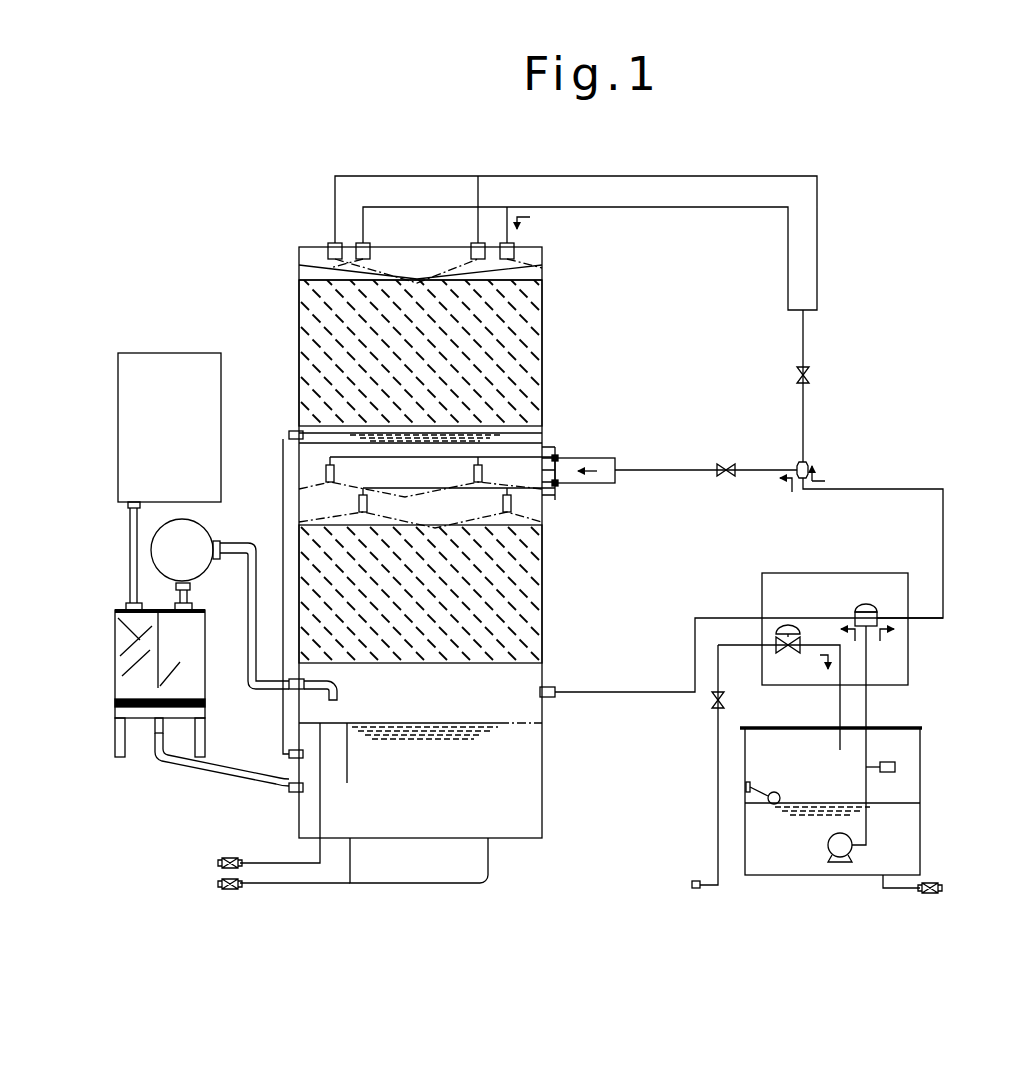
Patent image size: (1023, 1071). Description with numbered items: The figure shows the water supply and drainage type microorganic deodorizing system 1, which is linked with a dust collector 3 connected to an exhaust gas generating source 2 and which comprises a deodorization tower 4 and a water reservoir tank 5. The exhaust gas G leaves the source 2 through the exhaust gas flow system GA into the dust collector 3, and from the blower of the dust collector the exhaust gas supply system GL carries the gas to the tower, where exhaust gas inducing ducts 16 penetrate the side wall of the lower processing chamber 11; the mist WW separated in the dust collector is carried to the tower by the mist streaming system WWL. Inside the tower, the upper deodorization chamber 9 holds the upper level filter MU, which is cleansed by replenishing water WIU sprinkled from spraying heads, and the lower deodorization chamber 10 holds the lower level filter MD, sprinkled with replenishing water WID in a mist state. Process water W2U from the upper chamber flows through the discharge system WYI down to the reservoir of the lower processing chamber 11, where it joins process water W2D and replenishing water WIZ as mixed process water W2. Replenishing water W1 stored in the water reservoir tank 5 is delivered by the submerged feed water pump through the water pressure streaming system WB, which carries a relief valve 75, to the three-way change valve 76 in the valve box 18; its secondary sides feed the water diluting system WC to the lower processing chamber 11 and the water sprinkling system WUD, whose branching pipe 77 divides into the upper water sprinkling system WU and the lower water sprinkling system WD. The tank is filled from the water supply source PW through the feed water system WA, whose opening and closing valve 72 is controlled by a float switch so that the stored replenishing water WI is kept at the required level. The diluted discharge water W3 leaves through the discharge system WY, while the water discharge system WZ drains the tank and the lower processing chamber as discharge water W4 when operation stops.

The deodorizing system 1 is at (528, 168).
The exhaust gas generating source 2 is at (168, 372).
The dust collector 3 is at (118, 678).
The deodorization tower 4 is at (525, 326).
The water reservoir tank 5 is at (905, 788).
The upper deodorization chamber 9 is at (525, 292).
The lower deodorization chamber 10 is at (542, 547).
The lower processing chamber 11 is at (542, 753).
The exhaust gas inducing duct 16 is at (333, 703).
The valve box 18 is at (808, 596).
The opening and closing valve 72 is at (784, 628).
The relief valve 75 is at (895, 767).
The three-way change valve 76 is at (876, 605).
The branching pipe 77 is at (806, 462).
The upper level filter MU is at (525, 372).
The lower level filter MD is at (542, 597).
The upper water sprinkling system WU is at (826, 302).
The replenishing water WIU is at (340, 168).
The replenishing water WID is at (466, 487).
The lower water sprinkling system WD is at (706, 460).
The water sprinkling system WUD is at (905, 548).
The water diluting system WC is at (741, 657).
The water pressure streaming system WB is at (882, 735).
The feed water system WA is at (694, 813).
The water supply source PW is at (686, 885).
The water discharge system WZ is at (419, 876).
The discharge system WY is at (280, 794).
The discharge water W3 is at (212, 863).
The discharge water W4 is at (212, 884).
The discharge system WYI is at (259, 580).
The exhaust gas supply system GL is at (240, 546).
The exhaust gas flow system GA is at (130, 551).
The mist streaming system WWL is at (196, 768).
The mist WW is at (242, 773).
The process water W2U is at (272, 614).
The process water W2D is at (435, 668).
The mixed process water W2 is at (542, 801).
The exhaust gas G is at (240, 594).
The replenishing water WIZ is at (585, 683).
The replenishing water W1 is at (701, 766).
The replenishing water WI is at (905, 840).